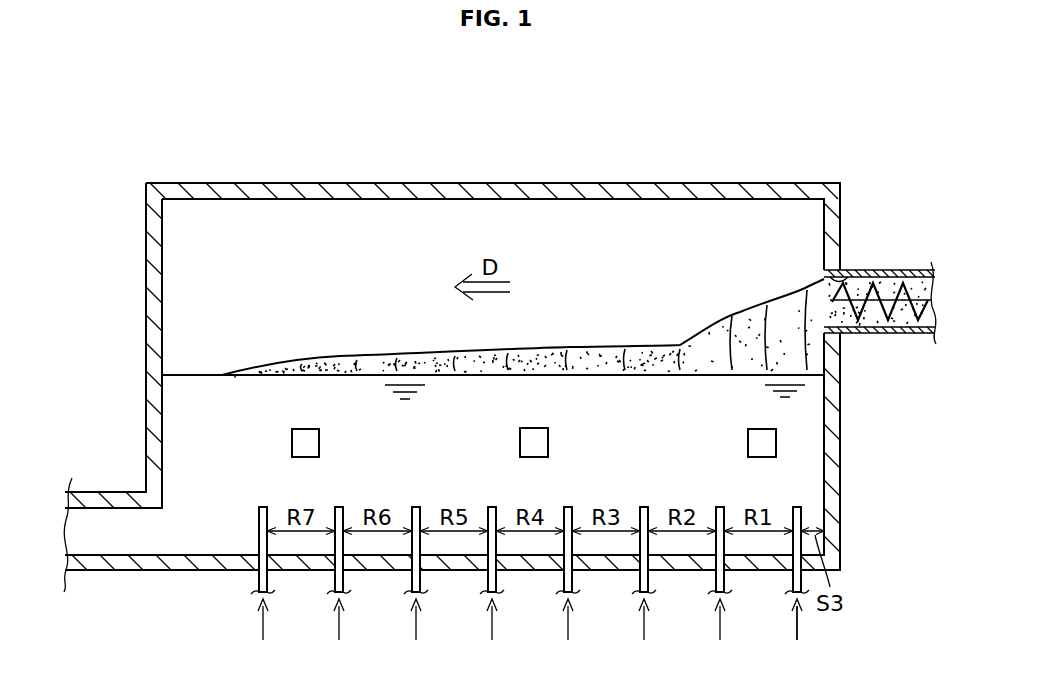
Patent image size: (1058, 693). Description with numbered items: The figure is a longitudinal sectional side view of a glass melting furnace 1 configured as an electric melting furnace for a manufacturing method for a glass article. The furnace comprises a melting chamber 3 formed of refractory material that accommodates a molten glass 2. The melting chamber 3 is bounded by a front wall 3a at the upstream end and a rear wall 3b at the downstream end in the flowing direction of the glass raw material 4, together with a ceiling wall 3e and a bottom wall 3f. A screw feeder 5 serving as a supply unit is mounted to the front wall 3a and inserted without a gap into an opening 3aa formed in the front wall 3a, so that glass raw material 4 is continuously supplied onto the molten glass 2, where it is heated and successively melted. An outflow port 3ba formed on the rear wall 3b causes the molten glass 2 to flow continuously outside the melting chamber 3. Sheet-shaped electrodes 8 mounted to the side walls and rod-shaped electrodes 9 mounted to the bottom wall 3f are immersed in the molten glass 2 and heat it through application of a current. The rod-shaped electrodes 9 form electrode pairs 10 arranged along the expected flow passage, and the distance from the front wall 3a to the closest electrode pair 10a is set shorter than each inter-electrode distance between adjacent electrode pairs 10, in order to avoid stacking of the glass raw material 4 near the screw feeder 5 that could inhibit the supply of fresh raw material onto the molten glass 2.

The glass melting furnace 1 is at (650, 159).
The molten glass 2 is at (794, 463).
The melting chamber 3 is at (473, 183).
The front wall 3a is at (825, 421).
The opening 3aa is at (841, 278).
The rear wall 3b is at (162, 433).
The outflow port 3ba is at (142, 508).
The ceiling wall 3e is at (343, 200).
The bottom wall 3f is at (218, 554).
The glass raw material 4 is at (588, 346).
The screw feeder 5 is at (903, 270).
The sheet-shaped electrode 8 is at (292, 441).
The rod-shaped electrode 9 is at (263, 505).
The electrode pair 10 is at (526, 634).
The closest electrode pair 10a is at (833, 638).